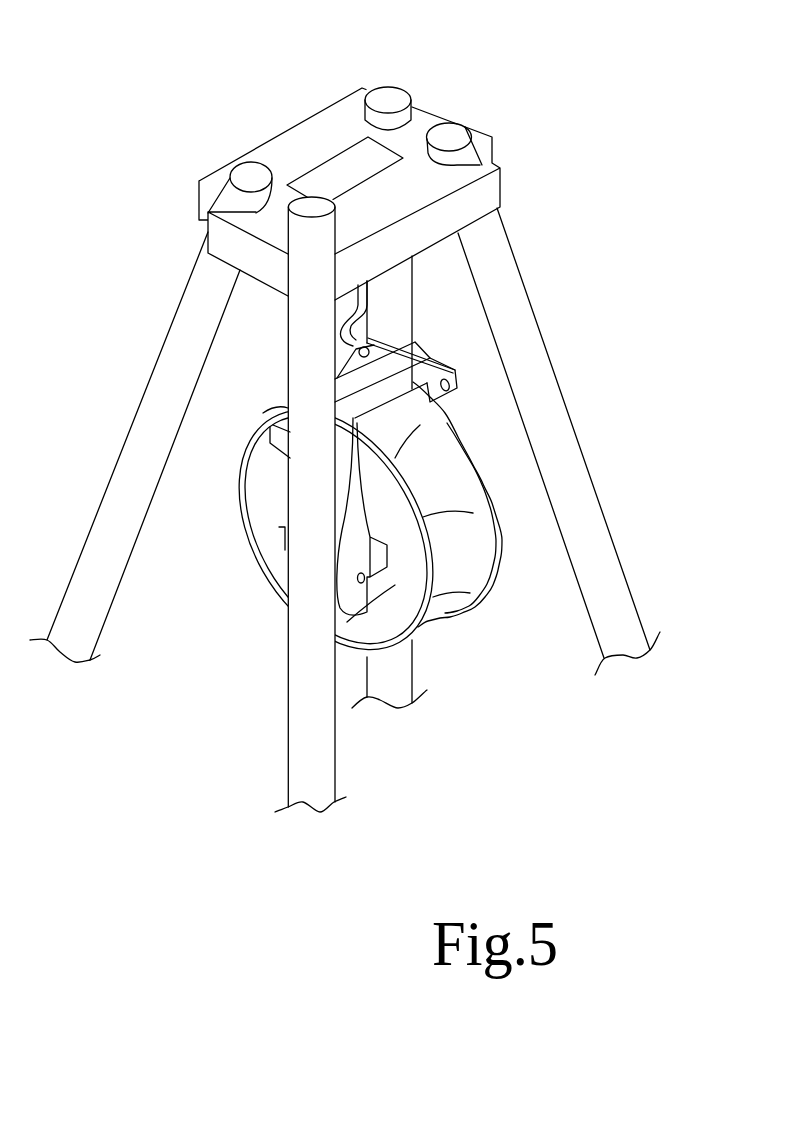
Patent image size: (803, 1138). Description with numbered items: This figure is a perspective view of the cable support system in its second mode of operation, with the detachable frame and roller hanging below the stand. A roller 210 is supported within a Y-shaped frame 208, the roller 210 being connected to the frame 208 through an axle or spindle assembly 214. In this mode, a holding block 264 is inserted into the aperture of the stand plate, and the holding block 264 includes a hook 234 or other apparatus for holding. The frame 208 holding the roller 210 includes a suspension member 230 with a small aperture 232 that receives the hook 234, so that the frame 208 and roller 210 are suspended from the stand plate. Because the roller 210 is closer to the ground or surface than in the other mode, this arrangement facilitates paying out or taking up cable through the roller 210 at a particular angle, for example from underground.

The frame 208 is at (360, 540).
The roller 210 is at (472, 557).
The axle or spindle assembly 214 is at (410, 632).
The suspension member 230 is at (418, 337).
The small aperture 232 is at (347, 355).
The hook 234 is at (367, 315).
The holding block 264 is at (352, 162).